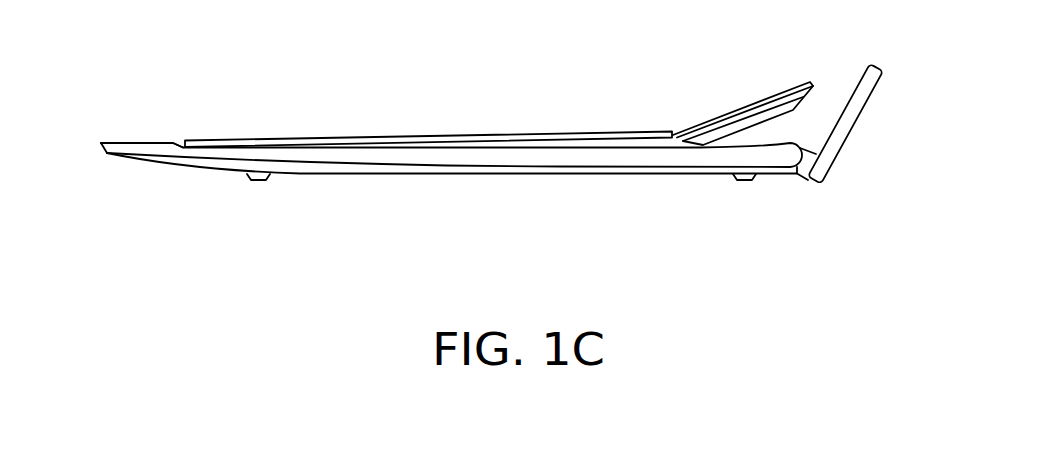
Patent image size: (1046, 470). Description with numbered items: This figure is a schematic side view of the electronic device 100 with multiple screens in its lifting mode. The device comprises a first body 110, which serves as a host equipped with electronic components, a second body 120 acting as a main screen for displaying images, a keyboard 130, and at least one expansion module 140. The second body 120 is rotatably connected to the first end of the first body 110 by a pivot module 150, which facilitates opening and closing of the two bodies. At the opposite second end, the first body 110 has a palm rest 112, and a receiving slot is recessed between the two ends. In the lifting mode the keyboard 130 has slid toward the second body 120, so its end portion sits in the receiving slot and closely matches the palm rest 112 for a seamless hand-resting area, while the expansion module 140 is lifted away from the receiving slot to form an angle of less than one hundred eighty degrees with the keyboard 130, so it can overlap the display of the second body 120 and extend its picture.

The electronic device with multiple screens 100 is at (498, 149).
The first body 110 is at (438, 157).
The palm rest 112 is at (142, 148).
The second body 120 is at (862, 106).
The keyboard 130 is at (501, 134).
The expansion module 140 is at (740, 108).
The pivot module 150 is at (804, 180).